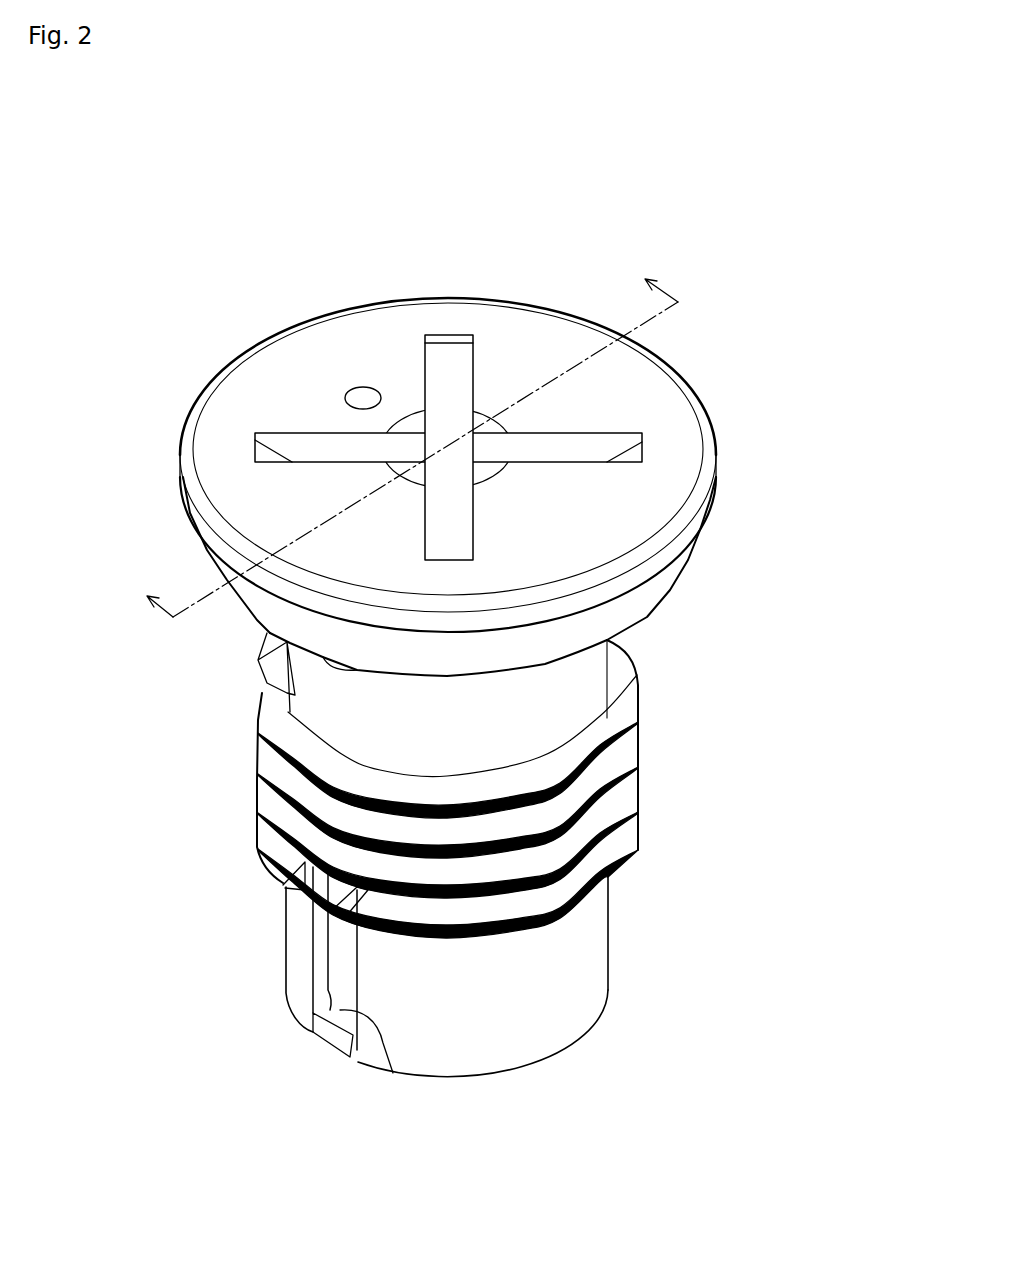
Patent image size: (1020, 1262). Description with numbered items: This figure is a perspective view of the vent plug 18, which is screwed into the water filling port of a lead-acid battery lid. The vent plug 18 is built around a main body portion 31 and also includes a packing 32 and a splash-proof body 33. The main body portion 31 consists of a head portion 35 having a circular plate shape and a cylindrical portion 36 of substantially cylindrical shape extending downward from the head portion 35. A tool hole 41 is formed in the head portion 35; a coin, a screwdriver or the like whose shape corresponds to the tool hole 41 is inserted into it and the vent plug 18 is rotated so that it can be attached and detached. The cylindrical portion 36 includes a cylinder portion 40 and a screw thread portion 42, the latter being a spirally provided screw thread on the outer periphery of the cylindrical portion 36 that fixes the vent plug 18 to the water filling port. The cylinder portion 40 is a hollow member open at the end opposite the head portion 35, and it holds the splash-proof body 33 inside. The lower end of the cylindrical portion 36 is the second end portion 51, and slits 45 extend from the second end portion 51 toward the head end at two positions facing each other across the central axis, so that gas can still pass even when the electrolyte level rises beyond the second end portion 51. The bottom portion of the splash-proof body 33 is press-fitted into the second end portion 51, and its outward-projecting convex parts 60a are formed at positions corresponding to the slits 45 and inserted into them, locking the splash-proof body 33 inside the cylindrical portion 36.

The vent plug 18 is at (657, 232).
The main body portion 31 is at (714, 428).
The packing 32 is at (672, 598).
The head portion 35 is at (668, 407).
The tool hole 41 is at (447, 358).
The cylinder portion 40 is at (613, 922).
The screw thread portion 42 is at (632, 843).
The cylindrical portion 36 is at (586, 988).
The second end portion 51 is at (503, 1074).
The splash-proof body 33 is at (393, 1073).
The slit 45 is at (322, 1027).
The convex part 60a is at (340, 1042).